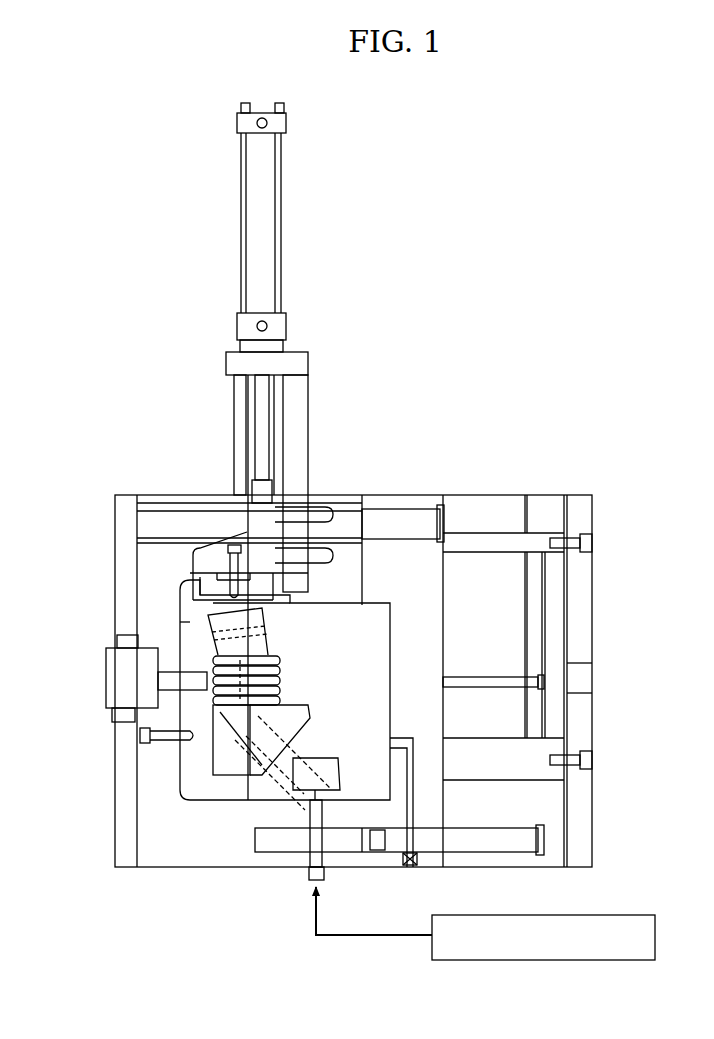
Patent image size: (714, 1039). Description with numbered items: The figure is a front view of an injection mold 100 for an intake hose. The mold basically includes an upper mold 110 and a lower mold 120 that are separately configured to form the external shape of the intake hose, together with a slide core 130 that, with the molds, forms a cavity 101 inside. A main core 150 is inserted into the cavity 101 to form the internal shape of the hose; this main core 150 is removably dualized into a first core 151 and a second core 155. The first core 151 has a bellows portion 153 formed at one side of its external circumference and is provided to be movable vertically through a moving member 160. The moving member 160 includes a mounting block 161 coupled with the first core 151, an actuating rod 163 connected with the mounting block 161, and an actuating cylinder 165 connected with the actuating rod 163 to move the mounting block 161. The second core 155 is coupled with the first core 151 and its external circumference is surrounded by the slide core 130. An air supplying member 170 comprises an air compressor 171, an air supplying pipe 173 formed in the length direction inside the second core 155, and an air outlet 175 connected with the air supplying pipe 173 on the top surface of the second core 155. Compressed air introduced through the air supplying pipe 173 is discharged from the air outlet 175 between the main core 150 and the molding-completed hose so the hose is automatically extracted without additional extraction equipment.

The injection mold 100 is at (440, 392).
The cavity 101 is at (313, 732).
The upper mold 110 is at (377, 662).
The lower mold 120 is at (190, 622).
The slide core 130 is at (228, 730).
The main core 150 is at (205, 657).
The first core 151 is at (235, 628).
The bellows portion 153 is at (288, 660).
The second core 155 is at (320, 745).
The moving member 160 is at (222, 392).
The mounting block 161 is at (215, 565).
The actuating rod 163 is at (262, 428).
The actuating cylinder 165 is at (262, 272).
The air supplying member 170 is at (282, 984).
The air compressor 171 is at (432, 948).
The air supplying pipe 173 is at (300, 778).
The air outlet 175 is at (245, 702).